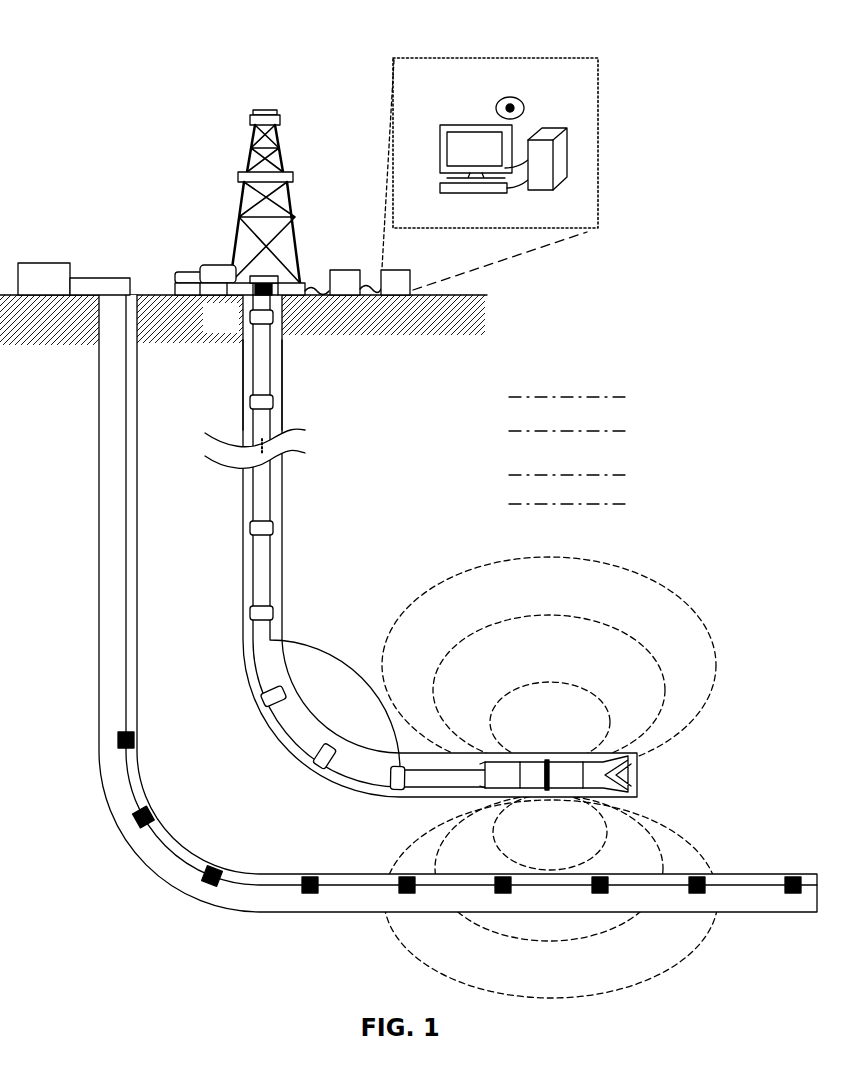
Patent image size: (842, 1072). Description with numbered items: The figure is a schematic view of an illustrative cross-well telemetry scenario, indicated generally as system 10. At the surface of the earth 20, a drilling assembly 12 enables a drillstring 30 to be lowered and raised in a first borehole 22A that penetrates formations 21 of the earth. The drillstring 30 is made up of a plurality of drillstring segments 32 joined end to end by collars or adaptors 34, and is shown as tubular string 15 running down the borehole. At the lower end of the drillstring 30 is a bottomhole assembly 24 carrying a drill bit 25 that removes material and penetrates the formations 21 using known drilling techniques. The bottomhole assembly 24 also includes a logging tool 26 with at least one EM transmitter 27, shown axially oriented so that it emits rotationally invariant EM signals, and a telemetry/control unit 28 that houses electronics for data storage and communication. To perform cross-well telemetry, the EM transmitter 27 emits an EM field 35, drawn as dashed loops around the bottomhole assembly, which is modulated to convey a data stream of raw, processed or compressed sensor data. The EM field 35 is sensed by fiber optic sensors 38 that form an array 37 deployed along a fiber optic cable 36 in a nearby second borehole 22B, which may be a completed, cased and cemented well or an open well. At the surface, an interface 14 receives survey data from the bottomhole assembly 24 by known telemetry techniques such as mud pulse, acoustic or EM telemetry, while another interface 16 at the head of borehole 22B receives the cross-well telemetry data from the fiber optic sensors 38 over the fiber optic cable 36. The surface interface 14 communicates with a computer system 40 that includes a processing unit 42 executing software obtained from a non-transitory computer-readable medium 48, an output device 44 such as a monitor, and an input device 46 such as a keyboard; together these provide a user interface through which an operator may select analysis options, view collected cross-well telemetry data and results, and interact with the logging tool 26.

The well system 10 is at (213, 87).
The drilling assembly 12 is at (233, 110).
The surface interface 14 is at (347, 270).
The tubular string 15 is at (265, 475).
The interface 16 is at (45, 263).
The earth 20 is at (208, 331).
The formations 21 is at (637, 385).
The borehole 22A is at (243, 367).
The borehole 22B is at (97, 390).
The bottomhole assembly 24 is at (633, 752).
The drill bit 25 is at (593, 786).
The logging tool 26 is at (528, 789).
The EM transmitter 27 is at (550, 789).
The telemetry/control unit 28 is at (499, 789).
The drillstring 30 is at (334, 338).
The drillstring segments 32 is at (272, 420).
The collars or adaptors 34 is at (249, 402).
The EM field 35 is at (727, 565).
The fiber optic cable 36 is at (130, 673).
The array 37 is at (705, 912).
The fiber optic sensors 38 is at (797, 877).
The computer system 40 is at (490, 153).
The processing unit 42 is at (554, 127).
The output device 44 is at (440, 152).
The input device 46 is at (492, 194).
The non-transitory computer-readable medium 48 is at (505, 97).